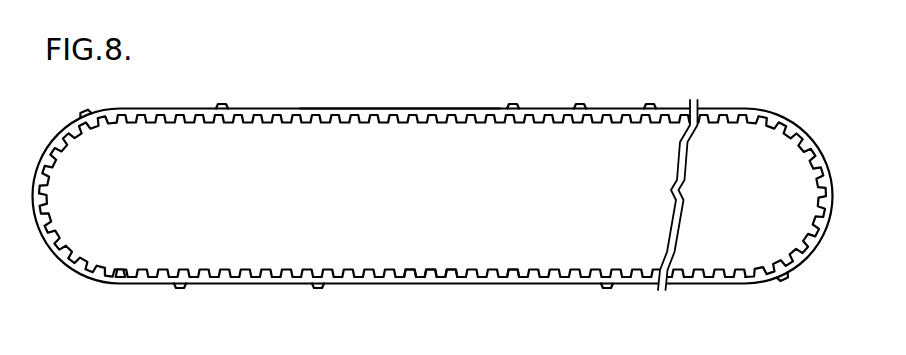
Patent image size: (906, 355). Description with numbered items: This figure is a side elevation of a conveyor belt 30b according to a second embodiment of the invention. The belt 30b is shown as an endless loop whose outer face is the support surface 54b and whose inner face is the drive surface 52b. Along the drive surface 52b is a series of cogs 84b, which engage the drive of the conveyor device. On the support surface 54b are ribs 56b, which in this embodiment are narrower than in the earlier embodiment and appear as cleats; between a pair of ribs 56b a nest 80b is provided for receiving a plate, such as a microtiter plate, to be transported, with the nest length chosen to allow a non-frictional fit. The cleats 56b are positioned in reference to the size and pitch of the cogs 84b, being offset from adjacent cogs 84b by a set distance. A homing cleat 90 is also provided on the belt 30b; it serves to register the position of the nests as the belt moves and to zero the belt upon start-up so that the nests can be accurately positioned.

The belt 30b is at (433, 147).
The drive surface 52b is at (113, 128).
The support surface 54b is at (443, 97).
The ribs 56b is at (223, 107).
The nest 80b is at (345, 110).
The cogs 84b is at (507, 272).
The homing cleat 90 is at (581, 105).